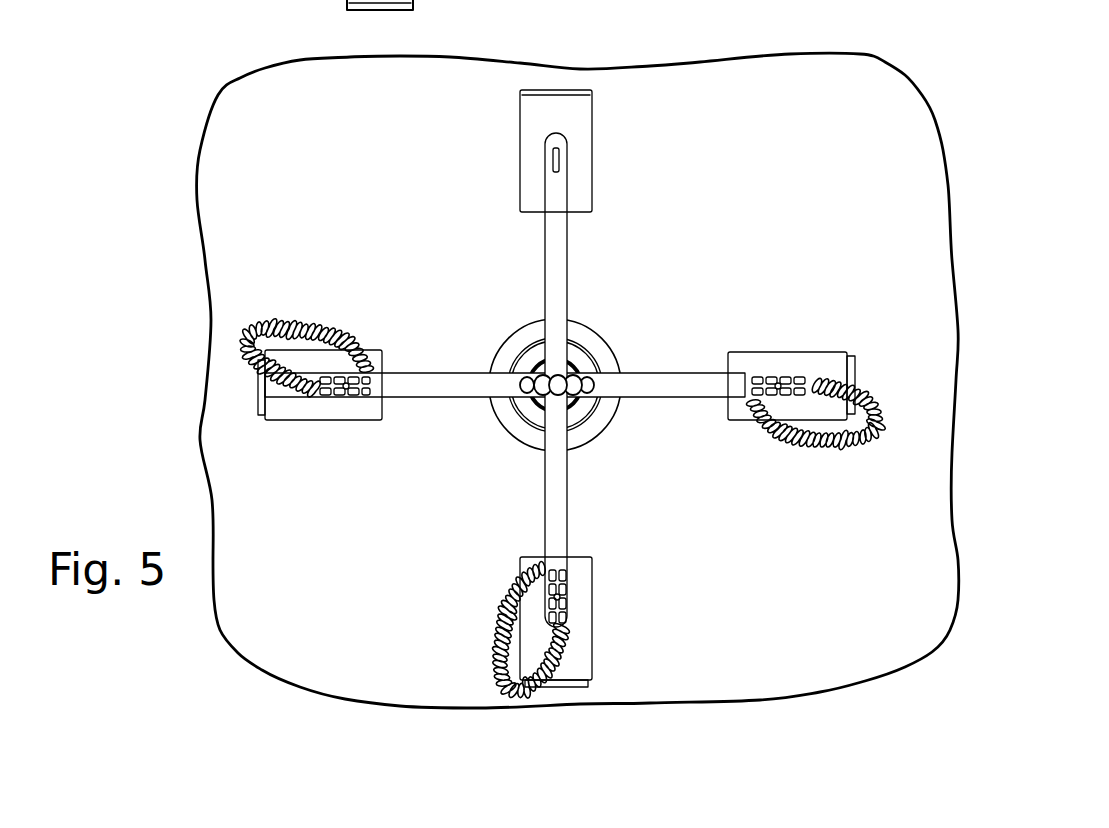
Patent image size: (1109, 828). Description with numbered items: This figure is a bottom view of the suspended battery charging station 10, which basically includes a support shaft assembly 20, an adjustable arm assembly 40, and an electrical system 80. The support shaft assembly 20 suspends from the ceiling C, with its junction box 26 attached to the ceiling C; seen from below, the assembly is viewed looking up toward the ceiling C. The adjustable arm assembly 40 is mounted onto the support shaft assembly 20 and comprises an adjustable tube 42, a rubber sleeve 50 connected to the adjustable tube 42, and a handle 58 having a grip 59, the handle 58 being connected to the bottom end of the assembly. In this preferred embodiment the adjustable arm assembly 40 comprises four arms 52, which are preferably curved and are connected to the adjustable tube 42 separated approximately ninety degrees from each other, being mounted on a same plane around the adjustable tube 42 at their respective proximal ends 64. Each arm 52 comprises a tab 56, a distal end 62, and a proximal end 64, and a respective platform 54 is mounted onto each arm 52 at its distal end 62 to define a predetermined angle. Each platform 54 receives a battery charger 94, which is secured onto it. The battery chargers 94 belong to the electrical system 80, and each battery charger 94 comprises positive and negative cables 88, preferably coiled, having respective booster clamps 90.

The ceiling C is at (775, 85).
The suspended battery charging station 10 is at (795, 186).
The support shaft assembly 20 is at (532, 380).
The junction box 26 is at (517, 413).
The adjustable arm assembly 40 is at (510, 380).
The adjustable tube 42 is at (577, 407).
The rubber sleeve 50 is at (476, 276).
The arm 52 is at (542, 265).
The platform 54 is at (583, 113).
The tab 56 is at (557, 170).
The handle 58 is at (533, 372).
The grip 59 is at (527, 377).
The distal end 62 is at (567, 448).
The proximal end 64 is at (568, 360).
The electrical system 80 is at (582, 447).
The positive and negative cables 88 is at (313, 327).
The booster clamps 90 is at (360, 390).
The battery charger 94 is at (255, 398).